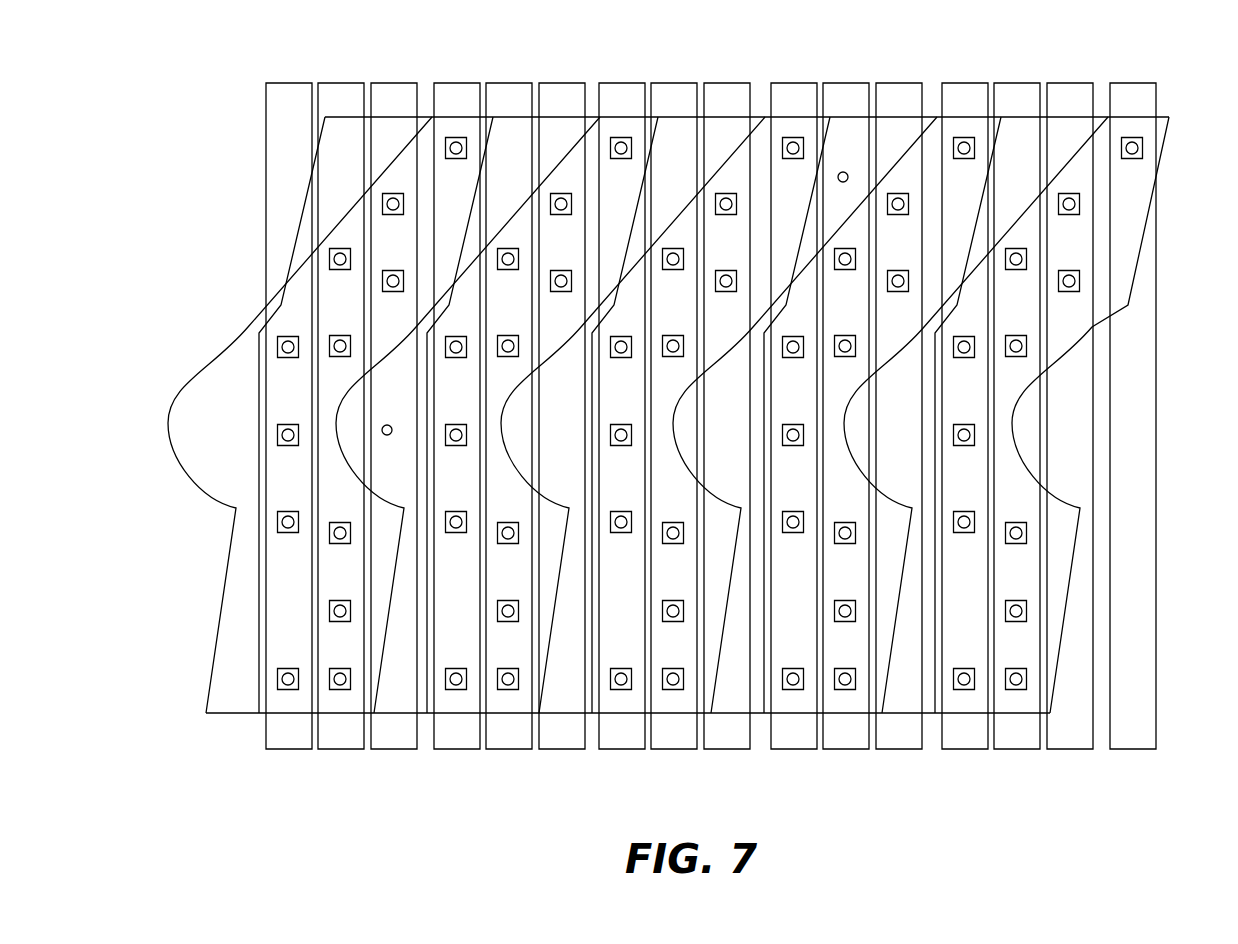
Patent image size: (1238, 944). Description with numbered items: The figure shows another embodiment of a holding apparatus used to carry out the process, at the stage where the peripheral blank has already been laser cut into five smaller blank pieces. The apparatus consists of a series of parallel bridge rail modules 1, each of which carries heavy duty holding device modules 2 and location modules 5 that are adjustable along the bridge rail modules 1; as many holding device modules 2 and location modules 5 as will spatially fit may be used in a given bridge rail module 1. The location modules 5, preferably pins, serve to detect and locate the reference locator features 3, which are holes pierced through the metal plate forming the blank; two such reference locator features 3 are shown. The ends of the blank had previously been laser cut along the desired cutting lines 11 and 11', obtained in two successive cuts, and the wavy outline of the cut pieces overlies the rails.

The bridge rail module 1 is at (1168, 94).
The heavy duty holding device module 2 is at (449, 705).
The reference locator feature 3 is at (364, 443).
The location module 5 is at (667, 637).
The cutting line 11 is at (650, 415).
The cutting line 11' is at (1122, 415).